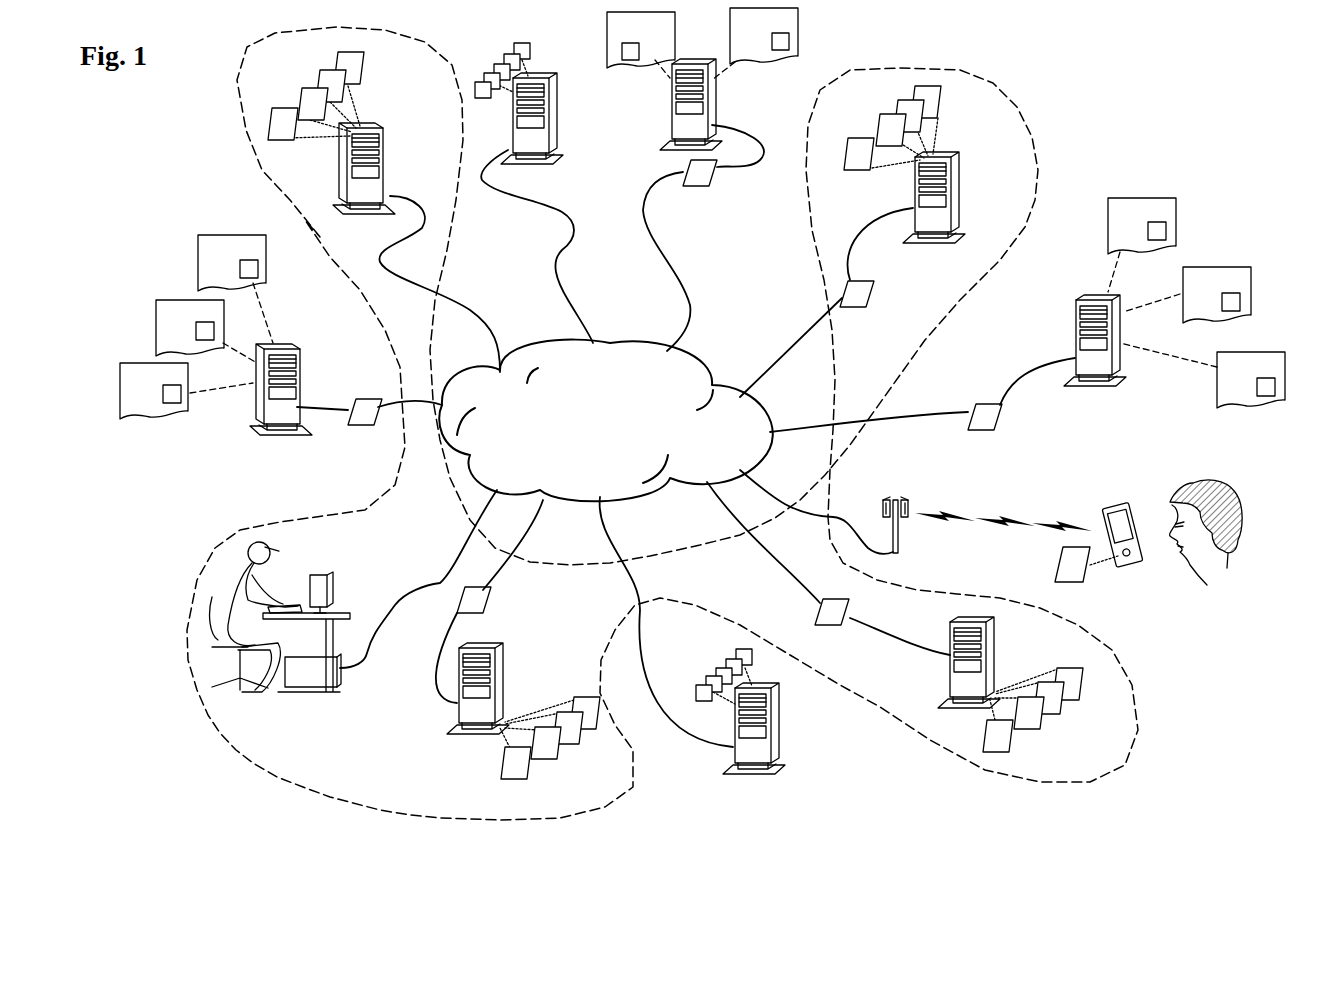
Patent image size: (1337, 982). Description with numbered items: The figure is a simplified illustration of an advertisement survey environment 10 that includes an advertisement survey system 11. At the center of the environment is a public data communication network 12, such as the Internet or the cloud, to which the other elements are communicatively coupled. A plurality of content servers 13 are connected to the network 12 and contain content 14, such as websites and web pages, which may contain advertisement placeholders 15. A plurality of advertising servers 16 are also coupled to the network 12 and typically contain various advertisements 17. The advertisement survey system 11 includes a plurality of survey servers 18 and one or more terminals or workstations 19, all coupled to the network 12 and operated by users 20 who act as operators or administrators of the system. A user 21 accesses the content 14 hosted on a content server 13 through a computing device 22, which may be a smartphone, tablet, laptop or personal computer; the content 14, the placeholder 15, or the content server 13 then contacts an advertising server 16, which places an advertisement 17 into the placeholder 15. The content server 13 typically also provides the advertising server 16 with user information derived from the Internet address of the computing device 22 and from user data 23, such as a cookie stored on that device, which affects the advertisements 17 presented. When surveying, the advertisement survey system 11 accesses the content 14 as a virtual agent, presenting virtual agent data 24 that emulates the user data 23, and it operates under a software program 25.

The advertisement survey environment 10 is at (521, 301).
The advertisement survey system 11 is at (232, 530).
The public data communication network 12 is at (700, 365).
The content server 13 is at (713, 112).
The content 14 is at (607, 18).
The advertisement placeholder 15 is at (630, 61).
The advertising server 16 is at (557, 123).
The advertisement 17 is at (478, 82).
The survey server 18 is at (385, 158).
The terminal or workstation 19 is at (333, 598).
The user 20 is at (272, 548).
The user 21 is at (1205, 486).
The computing device 22 is at (699, 188).
The user data 23 is at (1118, 506).
The virtual agent data 24 is at (1055, 574).
The software program 25 is at (289, 108).